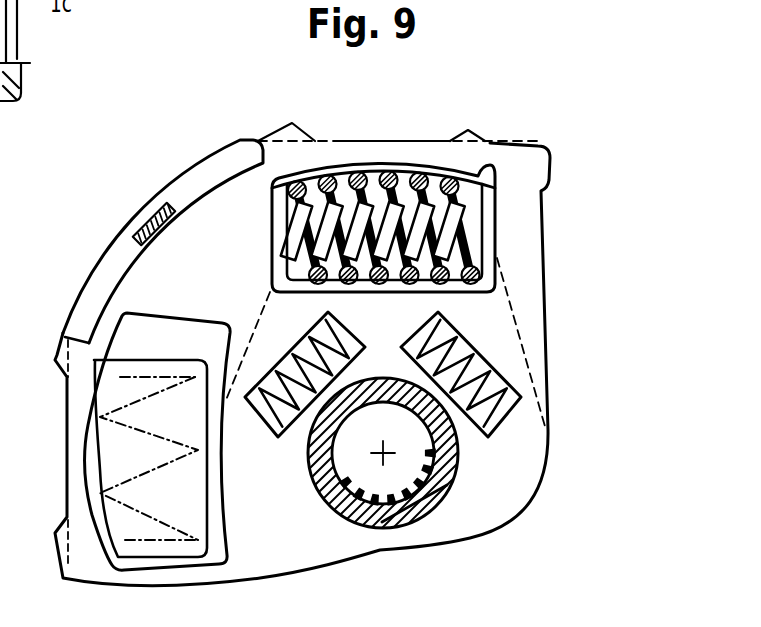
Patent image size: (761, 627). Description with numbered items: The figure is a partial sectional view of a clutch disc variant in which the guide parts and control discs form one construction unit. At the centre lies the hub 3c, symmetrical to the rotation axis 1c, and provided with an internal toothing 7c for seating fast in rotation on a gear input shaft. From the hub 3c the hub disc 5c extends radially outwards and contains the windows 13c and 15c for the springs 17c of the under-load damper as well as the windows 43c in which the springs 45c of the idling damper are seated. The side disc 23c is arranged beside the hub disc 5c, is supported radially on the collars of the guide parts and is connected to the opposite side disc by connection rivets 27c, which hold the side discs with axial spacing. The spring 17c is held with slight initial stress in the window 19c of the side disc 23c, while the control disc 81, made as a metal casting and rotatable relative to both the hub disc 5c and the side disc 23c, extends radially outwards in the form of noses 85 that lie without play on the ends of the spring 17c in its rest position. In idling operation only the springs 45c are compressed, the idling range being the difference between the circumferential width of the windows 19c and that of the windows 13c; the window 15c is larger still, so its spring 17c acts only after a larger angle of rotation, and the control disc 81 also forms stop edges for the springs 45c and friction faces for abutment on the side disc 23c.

The rotation axis 1c is at (383, 453).
The hub 3c is at (445, 493).
The hub disc 5c is at (140, 263).
The internal toothing 7c is at (390, 507).
The window 13c is at (328, 168).
The window 15c is at (125, 318).
The spring 17c is at (105, 434).
The window 19c is at (112, 378).
The side disc 23c is at (220, 157).
The connection rivet 27c is at (157, 200).
The window 43c is at (470, 306).
The spring 45c is at (258, 422).
The control disc 81 is at (253, 309).
The nose 85 is at (491, 256).